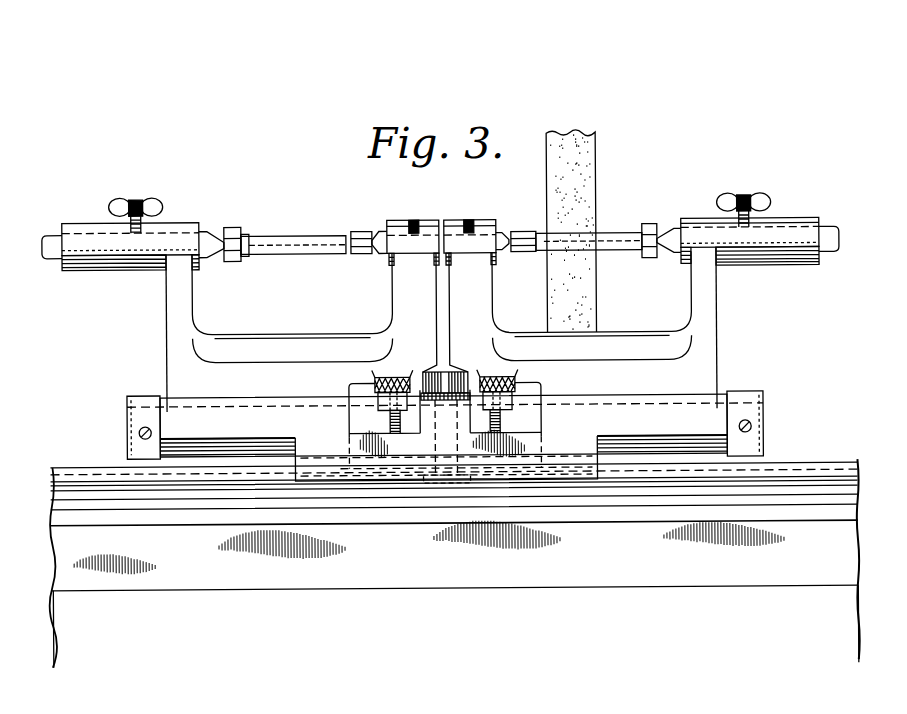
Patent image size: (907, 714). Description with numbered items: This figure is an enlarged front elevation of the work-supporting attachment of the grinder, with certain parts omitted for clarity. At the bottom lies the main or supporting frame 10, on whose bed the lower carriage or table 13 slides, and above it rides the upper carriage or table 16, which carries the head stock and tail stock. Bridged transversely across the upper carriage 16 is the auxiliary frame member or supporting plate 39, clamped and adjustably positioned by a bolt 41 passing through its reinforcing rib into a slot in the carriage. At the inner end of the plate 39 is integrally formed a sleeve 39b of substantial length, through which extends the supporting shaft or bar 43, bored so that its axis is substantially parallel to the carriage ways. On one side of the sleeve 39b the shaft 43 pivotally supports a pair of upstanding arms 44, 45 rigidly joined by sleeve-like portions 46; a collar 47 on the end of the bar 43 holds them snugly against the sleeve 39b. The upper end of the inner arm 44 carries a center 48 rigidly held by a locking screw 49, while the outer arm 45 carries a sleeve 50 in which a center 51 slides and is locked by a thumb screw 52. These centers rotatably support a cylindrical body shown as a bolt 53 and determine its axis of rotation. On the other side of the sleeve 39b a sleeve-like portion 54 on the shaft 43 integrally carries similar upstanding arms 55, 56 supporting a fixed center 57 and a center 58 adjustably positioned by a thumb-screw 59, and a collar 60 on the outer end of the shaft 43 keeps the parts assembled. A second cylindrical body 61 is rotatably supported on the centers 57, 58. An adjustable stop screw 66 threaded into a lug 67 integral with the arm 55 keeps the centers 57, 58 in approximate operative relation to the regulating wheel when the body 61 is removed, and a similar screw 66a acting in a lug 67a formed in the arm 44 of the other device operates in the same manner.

The main or supporting frame 10 is at (835, 605).
The lower carriage or table 13 is at (835, 558).
The upper carriage or table 16 is at (860, 494).
The auxiliary frame member or supporting plate 39 is at (587, 467).
The sleeve 39b is at (530, 418).
The bolt 41 is at (433, 443).
The supporting shaft or bar 43 is at (765, 430).
The inner arm 44 is at (472, 295).
The outer arm 45 is at (708, 299).
The sleeve-like portions 46 is at (640, 380).
The collar 47 is at (763, 392).
The center 48 is at (498, 236).
The locking screw 49 is at (470, 221).
The sleeve 50 is at (795, 222).
The center 51 is at (672, 232).
The thumb screw 52 is at (745, 199).
The bolt (cylindrical body) 53 is at (610, 236).
The sleeve-like portion 54 is at (212, 386).
The arm 55 is at (410, 290).
The arm 56 is at (178, 300).
The fixed center 57 is at (383, 236).
The center 58 is at (203, 232).
The thumb-screw 59 is at (140, 197).
The collar 60 is at (127, 396).
The cylindrical body 61 is at (288, 240).
The screw (adjustable stop) 66 is at (377, 378).
The screw (adjustable stop) 66a is at (515, 378).
The lug 67 is at (380, 408).
The lug 67a is at (529, 421).